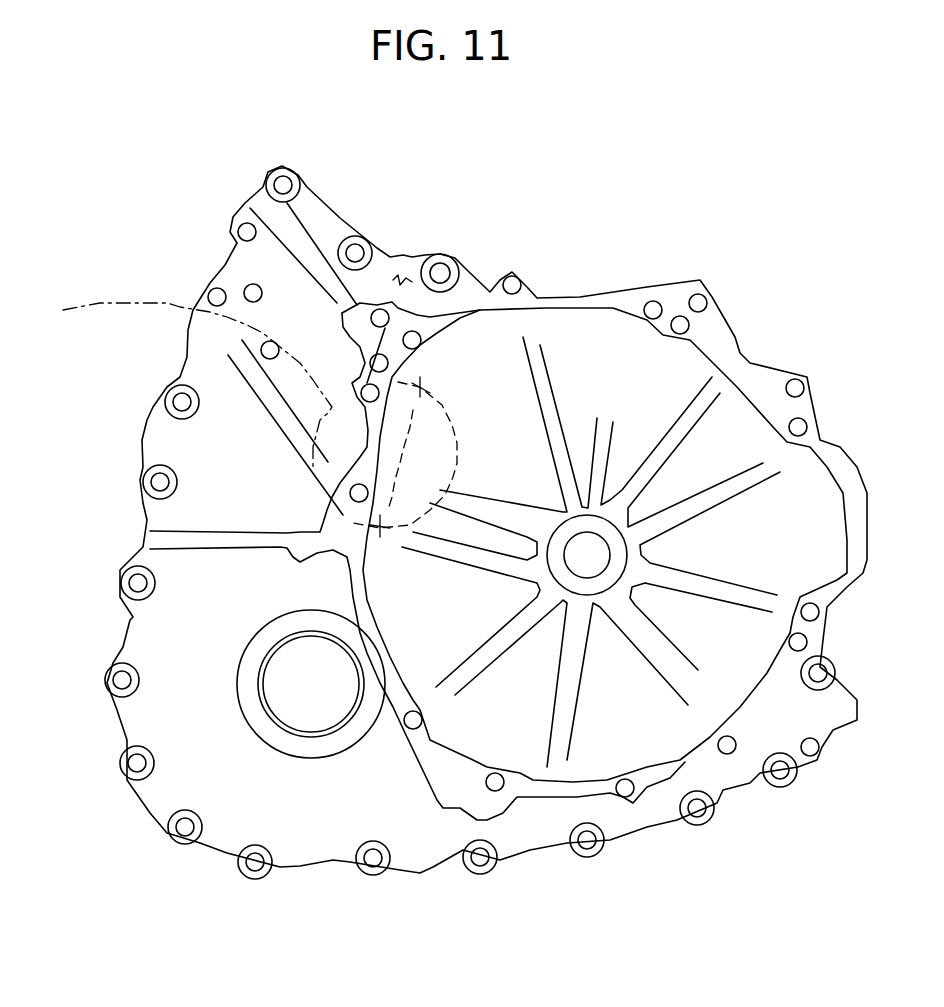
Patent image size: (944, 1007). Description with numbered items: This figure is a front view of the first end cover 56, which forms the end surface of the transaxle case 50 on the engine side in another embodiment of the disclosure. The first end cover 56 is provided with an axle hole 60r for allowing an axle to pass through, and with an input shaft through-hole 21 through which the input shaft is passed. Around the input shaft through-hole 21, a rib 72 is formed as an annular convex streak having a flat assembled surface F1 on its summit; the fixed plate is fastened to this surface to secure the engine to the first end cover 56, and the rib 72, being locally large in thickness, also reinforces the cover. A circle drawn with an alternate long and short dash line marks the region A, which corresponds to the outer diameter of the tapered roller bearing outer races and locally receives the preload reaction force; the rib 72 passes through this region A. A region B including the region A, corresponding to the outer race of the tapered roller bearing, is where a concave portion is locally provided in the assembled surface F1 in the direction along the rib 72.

The transaxle case 50 is at (650, 246).
The first end cover 56 is at (193, 455).
The input shaft through-hole 21 is at (570, 565).
The axle hole 60r is at (277, 707).
The rib 72 is at (783, 691).
The assembled surface F1 is at (723, 346).
The region A is at (185, 386).
The region B is at (400, 262).